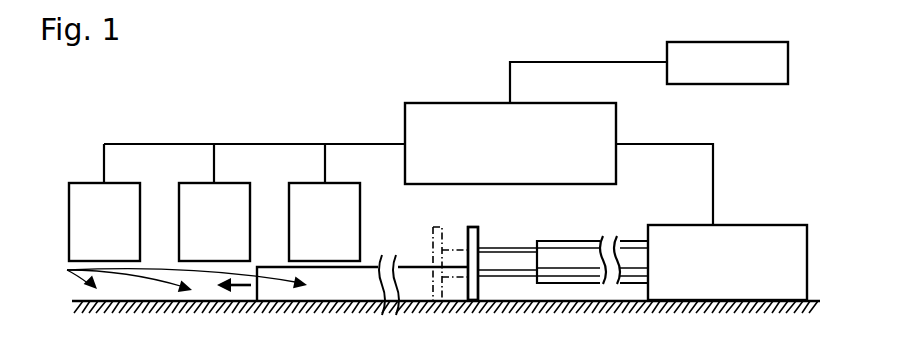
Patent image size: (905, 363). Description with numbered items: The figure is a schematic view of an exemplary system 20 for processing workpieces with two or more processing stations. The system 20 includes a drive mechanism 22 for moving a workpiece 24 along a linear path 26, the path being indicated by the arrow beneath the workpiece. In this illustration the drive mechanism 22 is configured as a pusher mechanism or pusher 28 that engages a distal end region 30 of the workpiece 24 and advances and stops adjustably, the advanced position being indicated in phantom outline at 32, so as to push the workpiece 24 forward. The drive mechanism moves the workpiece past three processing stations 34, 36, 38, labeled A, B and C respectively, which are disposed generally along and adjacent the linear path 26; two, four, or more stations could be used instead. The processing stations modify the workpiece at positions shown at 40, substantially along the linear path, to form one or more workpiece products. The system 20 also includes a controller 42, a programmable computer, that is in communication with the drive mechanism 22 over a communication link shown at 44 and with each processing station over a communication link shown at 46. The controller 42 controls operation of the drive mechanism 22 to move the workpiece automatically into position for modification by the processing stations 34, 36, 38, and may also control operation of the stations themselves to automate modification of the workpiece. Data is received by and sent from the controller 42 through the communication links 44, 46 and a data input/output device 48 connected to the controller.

The system 20 is at (226, 73).
The drive mechanism 22 is at (740, 207).
The workpiece 24 is at (340, 288).
The linear path 26 is at (241, 286).
The pusher mechanism 28 is at (767, 225).
The distal end region 30 is at (472, 288).
The phantom outline of pusher 32 is at (467, 232).
The processing station A 34 is at (289, 222).
The processing station B 36 is at (179, 222).
The processing station C 38 is at (69, 222).
The modification positions 40 is at (172, 277).
The controller 42 is at (574, 92).
The communication link to drive mechanism 44 is at (672, 144).
The communication link to processing stations 46 is at (256, 144).
The data input/output device 48 is at (749, 40).